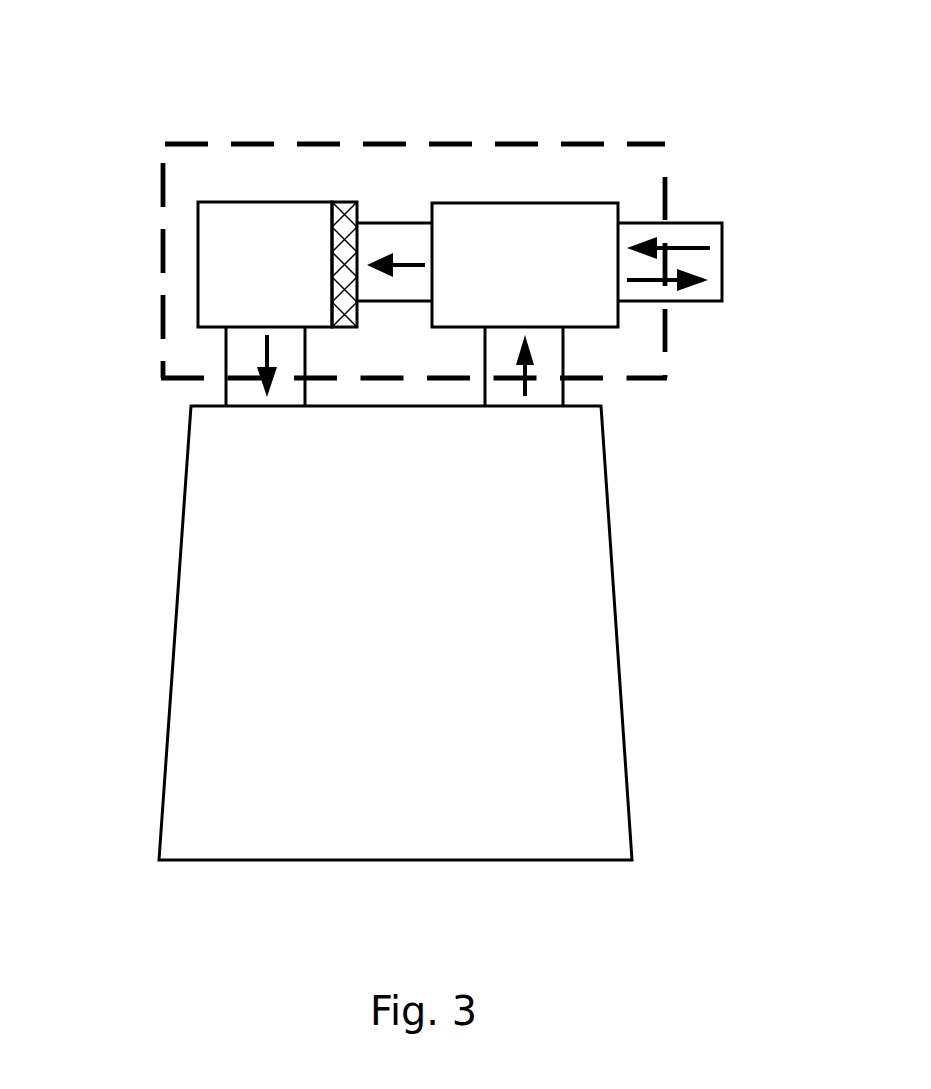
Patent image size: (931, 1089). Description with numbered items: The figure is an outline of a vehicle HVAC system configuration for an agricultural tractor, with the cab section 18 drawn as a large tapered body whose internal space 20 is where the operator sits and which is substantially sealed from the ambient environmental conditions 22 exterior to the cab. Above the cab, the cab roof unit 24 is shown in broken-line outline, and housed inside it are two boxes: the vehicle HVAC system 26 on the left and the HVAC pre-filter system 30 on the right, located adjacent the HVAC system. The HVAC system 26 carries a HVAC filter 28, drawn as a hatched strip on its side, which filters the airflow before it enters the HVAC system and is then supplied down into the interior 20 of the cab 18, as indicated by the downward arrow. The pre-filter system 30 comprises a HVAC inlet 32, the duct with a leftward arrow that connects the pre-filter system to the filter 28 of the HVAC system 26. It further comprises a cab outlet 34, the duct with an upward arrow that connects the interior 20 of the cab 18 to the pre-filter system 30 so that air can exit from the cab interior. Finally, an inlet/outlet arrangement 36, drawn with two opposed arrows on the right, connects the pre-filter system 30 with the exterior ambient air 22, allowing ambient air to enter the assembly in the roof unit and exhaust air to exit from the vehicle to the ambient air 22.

The cab section 18 is at (468, 633).
The internal space 20 is at (416, 606).
The ambient environmental conditions 22 is at (811, 277).
The cab roof unit 24 is at (160, 317).
The vehicle HVAC system 26 is at (225, 200).
The HVAC filter 28 is at (340, 200).
The HVAC pre-filter system 30 is at (563, 201).
The HVAC inlet 32 is at (395, 221).
The cab outlet 34 is at (565, 362).
The inlet/outlet arrangement 36 is at (693, 222).